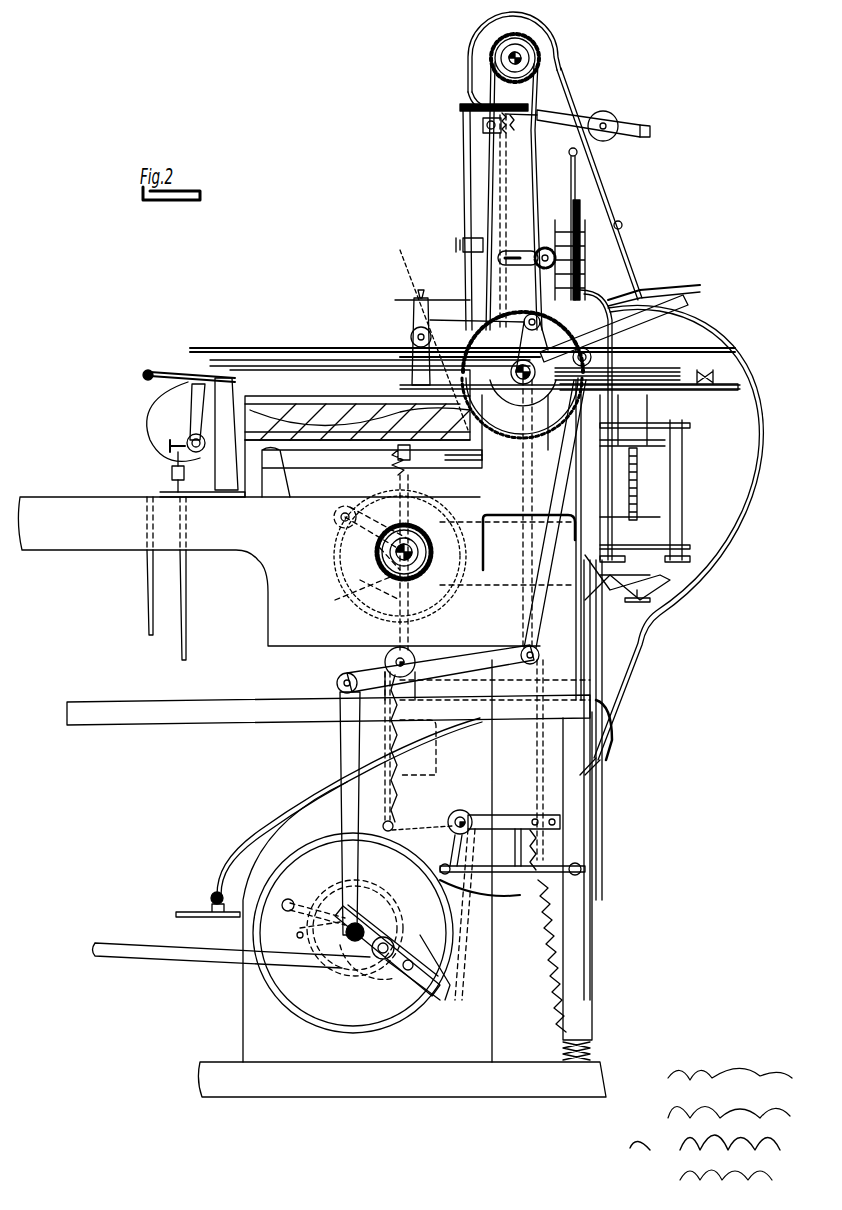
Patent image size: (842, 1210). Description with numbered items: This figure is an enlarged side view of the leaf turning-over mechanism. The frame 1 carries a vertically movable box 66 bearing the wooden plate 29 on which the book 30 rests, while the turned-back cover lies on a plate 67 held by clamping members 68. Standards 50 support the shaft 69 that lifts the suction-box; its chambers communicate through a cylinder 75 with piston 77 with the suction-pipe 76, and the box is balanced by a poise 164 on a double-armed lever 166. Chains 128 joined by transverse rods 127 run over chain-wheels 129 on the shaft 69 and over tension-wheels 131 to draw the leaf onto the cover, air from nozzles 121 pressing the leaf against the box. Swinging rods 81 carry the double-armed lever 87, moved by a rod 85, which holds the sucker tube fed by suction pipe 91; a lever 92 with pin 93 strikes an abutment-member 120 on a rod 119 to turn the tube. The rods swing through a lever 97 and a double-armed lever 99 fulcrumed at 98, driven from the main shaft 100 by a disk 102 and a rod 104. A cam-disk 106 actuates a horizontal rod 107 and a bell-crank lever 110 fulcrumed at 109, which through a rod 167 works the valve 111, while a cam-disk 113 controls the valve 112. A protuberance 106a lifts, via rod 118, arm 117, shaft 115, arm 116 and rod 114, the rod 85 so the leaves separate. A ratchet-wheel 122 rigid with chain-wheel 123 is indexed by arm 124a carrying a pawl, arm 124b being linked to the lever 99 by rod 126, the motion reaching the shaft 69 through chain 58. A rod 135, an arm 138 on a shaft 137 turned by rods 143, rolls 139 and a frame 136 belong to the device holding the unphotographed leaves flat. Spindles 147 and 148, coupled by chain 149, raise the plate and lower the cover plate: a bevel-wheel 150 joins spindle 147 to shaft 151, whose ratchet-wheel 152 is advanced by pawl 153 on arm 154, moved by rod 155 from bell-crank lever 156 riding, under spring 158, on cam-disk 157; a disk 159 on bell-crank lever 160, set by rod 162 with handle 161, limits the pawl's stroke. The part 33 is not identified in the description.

The frame 1 is at (578, 945).
The wooden plate 29 is at (342, 444).
The book 30 is at (620, 372).
The cable end 33 is at (185, 950).
The standards 50 is at (500, 140).
The chain 58 is at (493, 70).
The box 66 is at (270, 470).
The plate 67 is at (725, 385).
The clamping members 68 is at (712, 376).
The shaft 69 is at (530, 52).
The cylinder 75 is at (580, 248).
The suction-pipe 76 is at (590, 292).
The piston 77 is at (580, 175).
The rod 81 is at (400, 355).
The rod 85 is at (412, 310).
The double-armed lever 87 is at (415, 328).
The suction pipe 91 is at (736, 564).
The lever 92 is at (405, 358).
The pin 93 is at (454, 467).
The lever 97 is at (560, 470).
The fulcrum 98 is at (470, 636).
The double-armed lever 99 is at (463, 667).
The main shaft 100 is at (350, 940).
The disk 102 is at (310, 965).
The rod 104 is at (340, 678).
The cam-disk 106 is at (355, 960).
The protuberance 106a is at (353, 933).
The horizontal rod 107 is at (430, 945).
The fulcrum 109 is at (450, 826).
The bell-crank lever 110 is at (480, 872).
The valve 111 is at (605, 730).
The valve 112 is at (300, 900).
The cam-disk 113 is at (315, 928).
The rod 114 is at (545, 536).
The shaft 115 is at (455, 830).
The arm 116 is at (530, 825).
The arm 117 is at (500, 832).
The rod 118 is at (535, 862).
The rod 119 is at (463, 186).
The abutment-member 120 is at (465, 243).
The nozzles 121 is at (298, 370).
The ratchet-wheel 122 is at (505, 430).
The chain-wheel 123 is at (526, 271).
The arm of bell-crank lever 124a is at (640, 292).
The arm of bell-crank lever 124b is at (640, 300).
The rod 126 is at (570, 496).
The transverse rods 127 is at (640, 131).
The chains 128 is at (500, 160).
The chain-wheels 129 is at (486, 40).
The tension-wheels 131 is at (483, 127).
The rod 135 is at (297, 360).
The frame 136 is at (175, 485).
The shaft 137 is at (186, 446).
The arm 138 is at (190, 425).
The rolls 139 is at (290, 365).
The rods 143 is at (188, 400).
The spindle 147 is at (404, 468).
The spindle 148 is at (637, 484).
The chain 149 is at (432, 548).
The bevel-wheel 150 is at (418, 556).
The shaft 151 is at (380, 570).
The ratchet-wheel 152 is at (375, 552).
The pawl 153 is at (375, 535).
The arm 154 is at (380, 552).
The rod 155 is at (380, 590).
The bell-crank lever 156 is at (458, 780).
The cam-disk 157 is at (350, 985).
The spring 158 is at (430, 768).
The disk 159 is at (345, 506).
The bell-crank lever 160 is at (455, 497).
The handle 161 is at (655, 590).
The rod 162 is at (488, 580).
The poise 164 is at (620, 115).
The double-armed lever 166 is at (575, 118).
The rod 167 is at (602, 787).